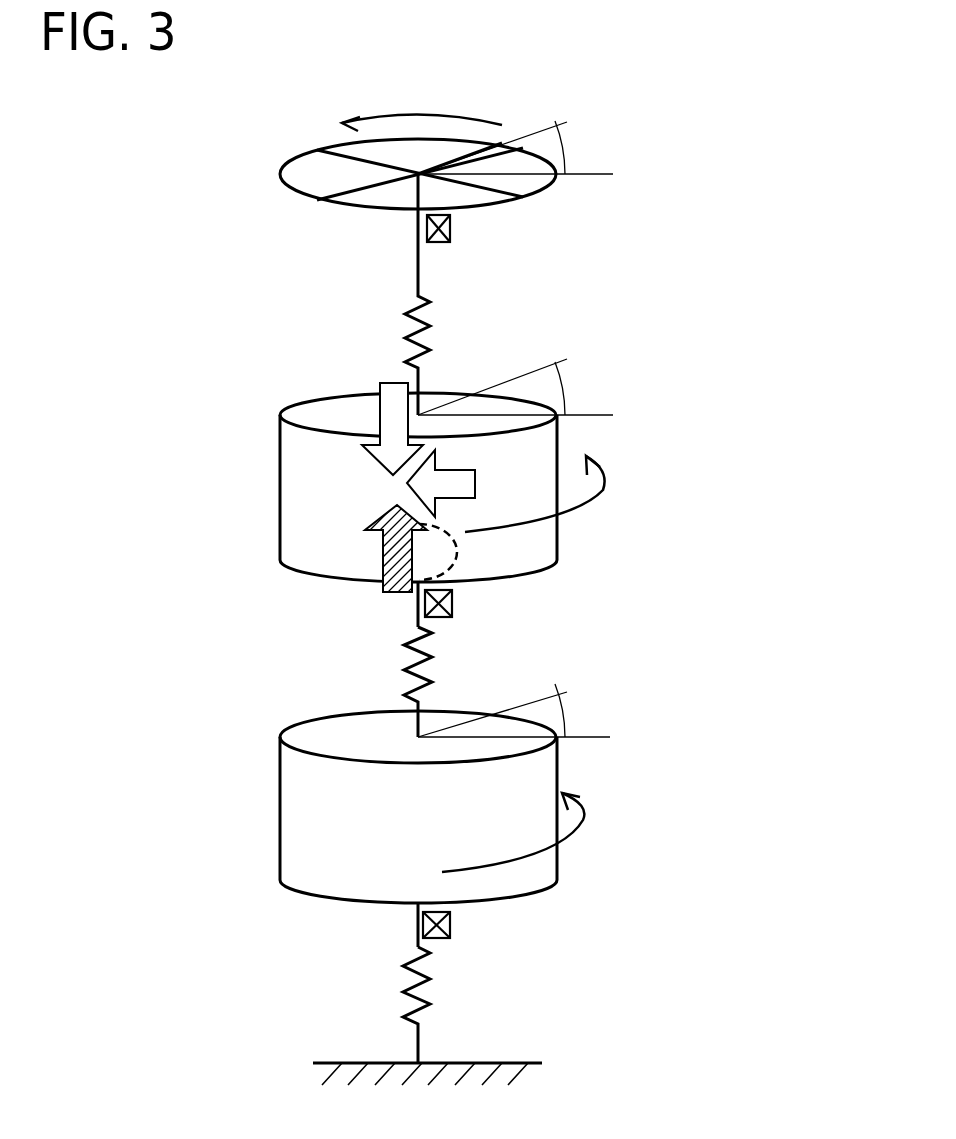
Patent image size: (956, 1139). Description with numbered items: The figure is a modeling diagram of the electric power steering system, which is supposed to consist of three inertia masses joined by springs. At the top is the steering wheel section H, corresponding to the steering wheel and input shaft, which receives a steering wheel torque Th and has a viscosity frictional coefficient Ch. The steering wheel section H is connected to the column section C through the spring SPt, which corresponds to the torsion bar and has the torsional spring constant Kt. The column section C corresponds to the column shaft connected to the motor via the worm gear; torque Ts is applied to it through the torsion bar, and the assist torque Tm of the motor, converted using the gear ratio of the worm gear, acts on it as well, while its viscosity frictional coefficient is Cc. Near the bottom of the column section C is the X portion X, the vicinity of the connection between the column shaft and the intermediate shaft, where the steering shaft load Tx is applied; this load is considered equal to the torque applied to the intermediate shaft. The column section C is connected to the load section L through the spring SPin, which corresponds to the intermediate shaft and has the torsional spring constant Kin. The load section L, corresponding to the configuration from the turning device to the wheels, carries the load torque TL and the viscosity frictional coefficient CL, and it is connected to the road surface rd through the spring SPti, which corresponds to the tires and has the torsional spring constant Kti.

The steering wheel section H is at (252, 182).
The steering wheel section torque Th is at (422, 101).
The steering wheel section viscosity frictional coefficient Ch is at (454, 236).
The spring SPt is at (441, 331).
The torsional spring constant of spring SPt Kt is at (396, 331).
The column section C is at (253, 513).
The torque applied to the column section Ts is at (387, 417).
The assist torque Tm is at (450, 485).
The X portion X is at (460, 553).
The steering shaft load Tx is at (383, 553).
The column section viscosity frictional coefficient Cc is at (456, 611).
The spring SPin is at (439, 666).
The torsional spring constant of spring SPin Kin is at (392, 666).
The load section L is at (250, 828).
The load section torque TL is at (527, 832).
The load section viscosity frictional coefficient CL is at (454, 933).
The spring SPti is at (438, 987).
The torsional spring constant of spring SPti Kti is at (392, 987).
The road surface rd is at (357, 1063).